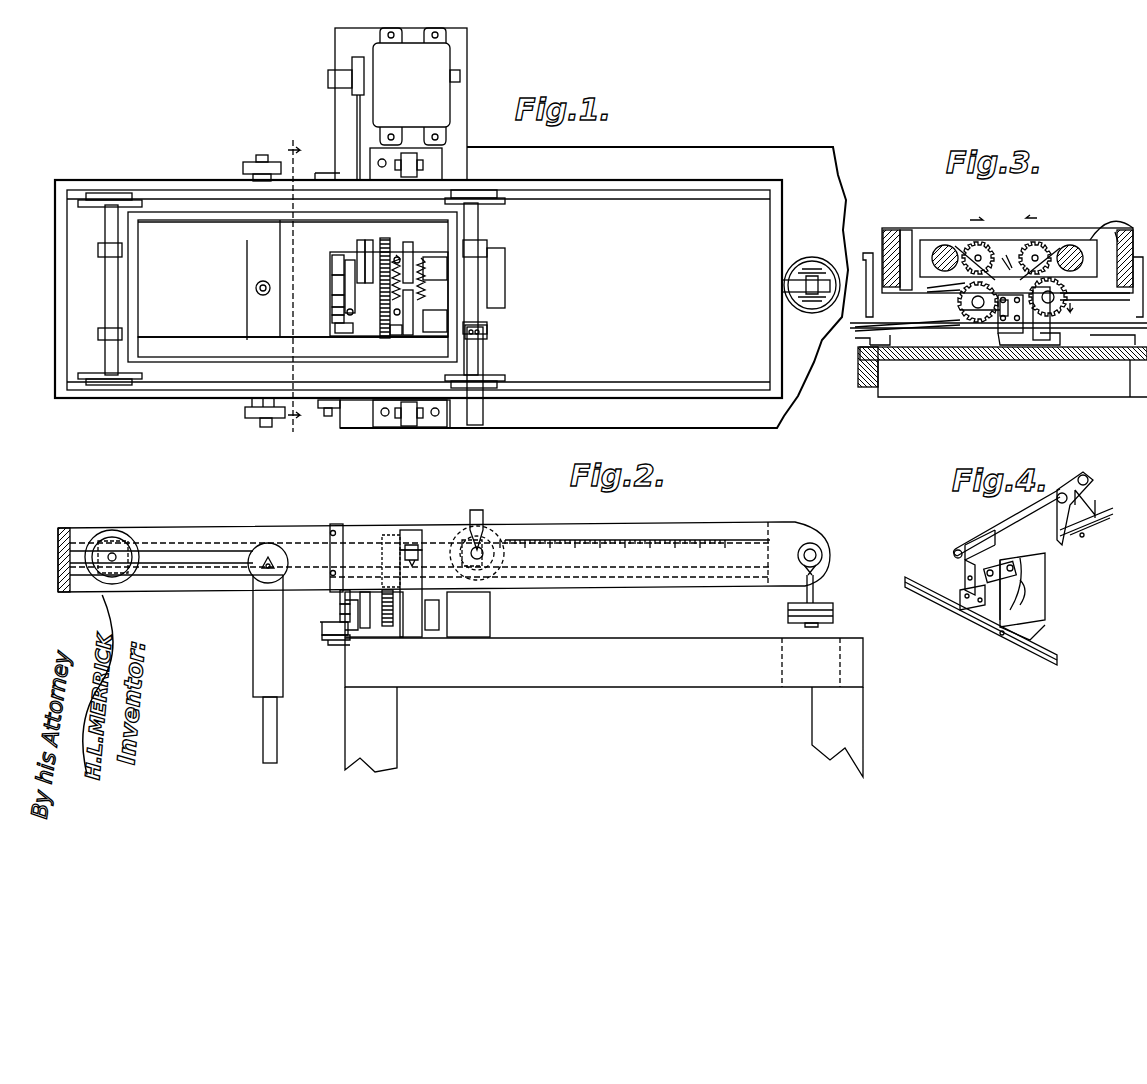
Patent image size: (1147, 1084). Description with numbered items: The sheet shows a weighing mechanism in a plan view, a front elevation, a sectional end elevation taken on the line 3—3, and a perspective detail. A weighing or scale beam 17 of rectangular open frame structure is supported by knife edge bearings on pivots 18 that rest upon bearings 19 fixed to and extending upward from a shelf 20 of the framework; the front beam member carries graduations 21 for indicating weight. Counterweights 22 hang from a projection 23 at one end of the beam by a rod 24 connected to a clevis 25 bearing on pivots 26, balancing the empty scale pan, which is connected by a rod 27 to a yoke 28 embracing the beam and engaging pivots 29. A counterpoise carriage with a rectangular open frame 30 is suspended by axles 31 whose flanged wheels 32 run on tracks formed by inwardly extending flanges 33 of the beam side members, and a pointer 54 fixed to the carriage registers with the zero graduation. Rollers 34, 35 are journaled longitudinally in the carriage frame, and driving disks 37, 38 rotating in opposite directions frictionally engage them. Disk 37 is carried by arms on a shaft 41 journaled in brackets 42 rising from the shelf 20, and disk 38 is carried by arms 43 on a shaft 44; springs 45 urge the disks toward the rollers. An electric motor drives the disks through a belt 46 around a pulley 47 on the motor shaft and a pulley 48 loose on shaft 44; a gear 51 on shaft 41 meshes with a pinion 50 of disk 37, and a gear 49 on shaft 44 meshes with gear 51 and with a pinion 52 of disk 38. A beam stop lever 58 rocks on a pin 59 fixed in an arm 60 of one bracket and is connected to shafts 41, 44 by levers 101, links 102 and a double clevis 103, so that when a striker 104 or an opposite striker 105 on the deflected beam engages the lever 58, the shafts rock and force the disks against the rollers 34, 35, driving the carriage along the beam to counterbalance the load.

In FIG. 1, the section line 3— 3 is at (293, 287).
In FIG. 1, the weighing or scale beam 17 is at (694, 388).
In FIG. 2, the weighing or scale beam 17 is at (186, 528).
In FIG. 1, the pivots 18 is at (410, 175).
In FIG. 3, the pivots 18 is at (868, 255).
In FIG. 2, the pivots 18 is at (412, 560).
In FIG. 1, the bearings 19 is at (420, 160).
In FIG. 3, the bearings 19 is at (868, 318).
In FIG. 2, the bearings 19 is at (411, 626).
In FIG. 1, the shelf 20 is at (594, 287).
In FIG. 3, the shelf 20 is at (1002, 367).
In FIG. 2, the shelf 20 is at (604, 707).
In FIG. 2, the graduated scale 21 is at (640, 538).
In FIG. 1, the counterweights 22 is at (812, 308).
In FIG. 2, the counterweights 22 is at (833, 612).
In FIG. 1, the projection 23 is at (797, 285).
In FIG. 2, the projection 23 is at (793, 535).
In FIG. 2, the rod 24 is at (815, 592).
In FIG. 1, the clevis 25 is at (800, 300).
In FIG. 2, the clevis 25 is at (823, 560).
In FIG. 1, the pivots 26 is at (812, 270).
In FIG. 2, the pivots 26 is at (817, 550).
In FIG. 1, the rod 27 is at (255, 288).
In FIG. 2, the rod 27 is at (272, 727).
In FIG. 1, the yoke 28 is at (247, 246).
In FIG. 2, the yoke 28 is at (268, 636).
In FIG. 1, the pivots 29 is at (258, 156).
In FIG. 2, the pivots 29 is at (273, 553).
In FIG. 1, the counterpoise carriage frame 30 is at (185, 215).
In FIG. 3, the counterpoise carriage frame 30 is at (905, 236).
In FIG. 2, the counterpoise carriage frame 30 is at (158, 556).
In FIG. 1, the axles 31 is at (105, 290).
In FIG. 2, the axles 31 is at (110, 550).
In FIG. 1, the flanged wheels 32 is at (490, 196).
In FIG. 3, the flanged wheels 32 is at (893, 238).
In FIG. 2, the flanged wheels 32 is at (122, 535).
In FIG. 1, the flanges 33 is at (118, 192).
In FIG. 3, the flanges 33 is at (1105, 300).
In FIG. 2, the flanges 33 is at (165, 580).
In FIG. 1, the roller 34 is at (192, 234).
In FIG. 3, the roller 34 is at (943, 250).
In FIG. 2, the roller 34 is at (216, 540).
In FIG. 1, the roller 35 is at (181, 342).
In FIG. 3, the roller 35 is at (1073, 245).
In FIG. 1, the driving disk 37 is at (408, 243).
In FIG. 3, the driving disk 37 is at (963, 250).
In FIG. 1, the driving disk 38 is at (408, 333).
In FIG. 3, the driving disk 38 is at (1040, 260).
In FIG. 2, the driving disk 38 is at (411, 530).
In FIG. 3, the shaft 41 is at (950, 325).
In FIG. 4, the shaft 41 is at (1018, 515).
In FIG. 1, the brackets 42 is at (492, 283).
In FIG. 3, the brackets 42 is at (1012, 335).
In FIG. 2, the brackets 42 is at (455, 622).
In FIG. 4, the brackets 42 is at (1046, 590).
In FIG. 2, the arms 43 is at (432, 615).
In FIG. 4, the arms 43 is at (1090, 503).
In FIG. 2, the shaft 44 is at (455, 605).
In FIG. 4, the shaft 44 is at (1097, 518).
In FIG. 1, the springs 45 is at (419, 293).
In FIG. 3, the springs 45 is at (1006, 255).
In FIG. 1, the belt 46 is at (356, 127).
In FIG. 3, the belt 46 is at (854, 337).
In FIG. 2, the belt 46 is at (378, 608).
In FIG. 1, the pulley 47 is at (350, 70).
In FIG. 1, the pulley 48 is at (350, 276).
In FIG. 3, the pulley 48 is at (983, 320).
In FIG. 2, the pulley 48 is at (362, 630).
In FIG. 1, the gear 49 is at (380, 333).
In FIG. 3, the gear 49 is at (1057, 300).
In FIG. 2, the gear 49 is at (388, 628).
In FIG. 1, the pinion 50 is at (360, 246).
In FIG. 3, the pinion 50 is at (980, 248).
In FIG. 1, the gear 51 is at (372, 243).
In FIG. 3, the gear 51 is at (950, 295).
In FIG. 1, the pinion 52 is at (390, 328).
In FIG. 3, the pinion 52 is at (1036, 248).
In FIG. 2, the pinion 52 is at (376, 561).
In FIG. 1, the pointer 54 is at (483, 352).
In FIG. 3, the pointer 54 is at (1100, 235).
In FIG. 2, the pointer 54 is at (485, 518).
In FIG. 1, the lever 58 is at (320, 308).
In FIG. 3, the lever 58 is at (1052, 330).
In FIG. 2, the lever 58 is at (318, 633).
In FIG. 4, the lever 58 is at (990, 632).
In FIG. 1, the pin 59 is at (332, 318).
In FIG. 2, the pin 59 is at (322, 632).
In FIG. 4, the pin 59 is at (1002, 637).
In FIG. 1, the arm 60 is at (336, 328).
In FIG. 3, the arm 60 is at (1045, 337).
In FIG. 2, the arm 60 is at (345, 640).
In FIG. 4, the arm 60 is at (1035, 630).
In FIG. 1, the levers 101 is at (340, 265).
In FIG. 3, the levers 101 is at (965, 302).
In FIG. 2, the levers 101 is at (338, 596).
In FIG. 4, the levers 101 is at (992, 566).
In FIG. 1, the links 102 is at (340, 280).
In FIG. 3, the links 102 is at (985, 312).
In FIG. 2, the links 102 is at (338, 608).
In FIG. 4, the links 102 is at (965, 572).
In FIG. 1, the double clevis 103 is at (340, 298).
In FIG. 3, the double clevis 103 is at (1000, 320).
In FIG. 2, the double clevis 103 is at (338, 619).
In FIG. 4, the double clevis 103 is at (975, 598).
In FIG. 1, the striker 104 is at (322, 412).
In FIG. 3, the striker 104 is at (1106, 343).
In FIG. 2, the striker 104 is at (345, 530).
In FIG. 1, the striker 105 is at (319, 165).
In FIG. 3, the striker 105 is at (864, 349).
In FIG. 2, the striker 105 is at (340, 625).